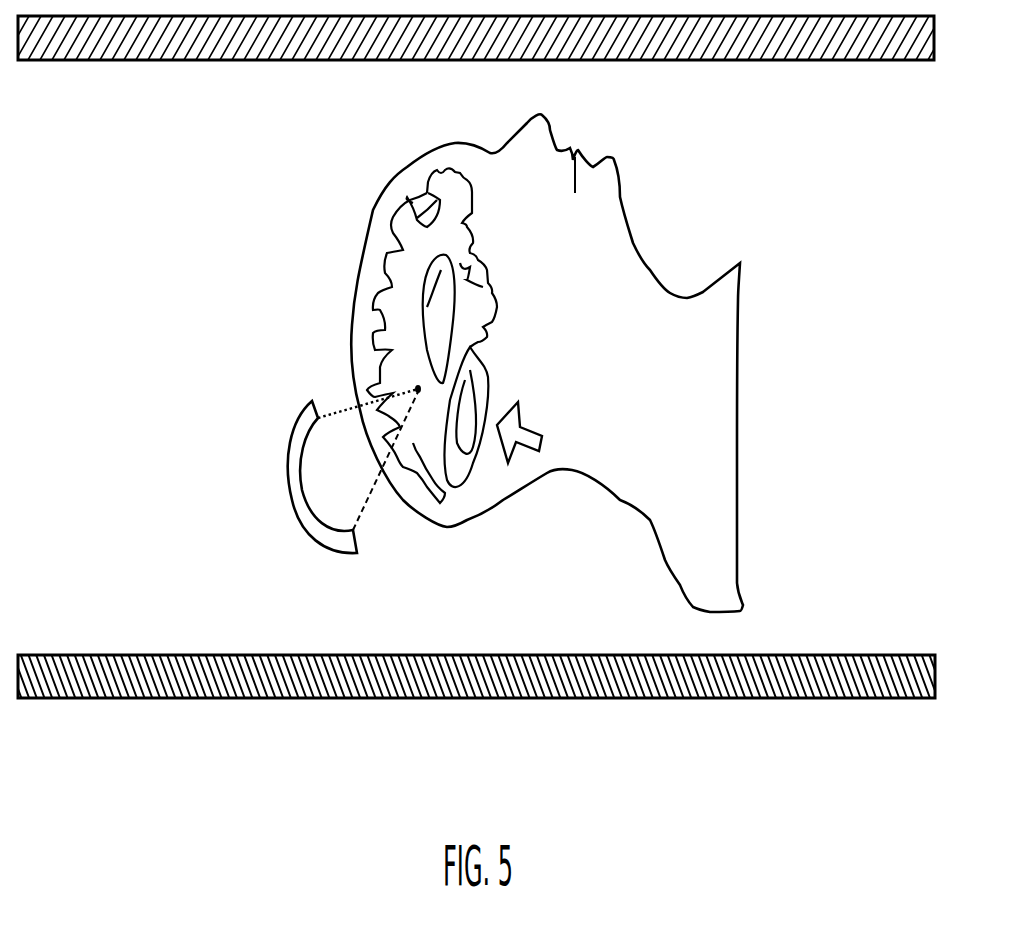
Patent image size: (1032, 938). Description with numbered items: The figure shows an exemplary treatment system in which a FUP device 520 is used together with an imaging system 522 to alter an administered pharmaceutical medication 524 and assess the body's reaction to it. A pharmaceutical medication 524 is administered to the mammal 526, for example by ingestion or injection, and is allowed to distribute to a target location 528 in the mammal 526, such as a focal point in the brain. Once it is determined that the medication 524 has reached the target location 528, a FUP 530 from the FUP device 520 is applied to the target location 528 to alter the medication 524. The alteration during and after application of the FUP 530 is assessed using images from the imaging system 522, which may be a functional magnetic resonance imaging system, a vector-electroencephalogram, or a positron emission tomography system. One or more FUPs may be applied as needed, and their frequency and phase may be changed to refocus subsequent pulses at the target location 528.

The FUP device 520 is at (280, 442).
The imaging system 522 is at (247, 66).
The pharmaceutical medication 524 is at (525, 430).
The mammal 526 is at (384, 188).
The target location 528 is at (423, 405).
The FUP 530 is at (340, 408).